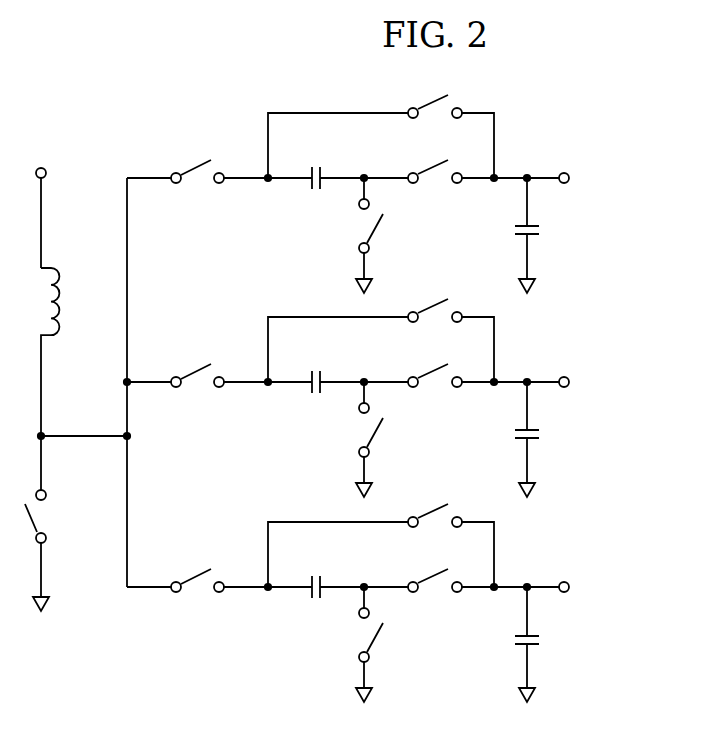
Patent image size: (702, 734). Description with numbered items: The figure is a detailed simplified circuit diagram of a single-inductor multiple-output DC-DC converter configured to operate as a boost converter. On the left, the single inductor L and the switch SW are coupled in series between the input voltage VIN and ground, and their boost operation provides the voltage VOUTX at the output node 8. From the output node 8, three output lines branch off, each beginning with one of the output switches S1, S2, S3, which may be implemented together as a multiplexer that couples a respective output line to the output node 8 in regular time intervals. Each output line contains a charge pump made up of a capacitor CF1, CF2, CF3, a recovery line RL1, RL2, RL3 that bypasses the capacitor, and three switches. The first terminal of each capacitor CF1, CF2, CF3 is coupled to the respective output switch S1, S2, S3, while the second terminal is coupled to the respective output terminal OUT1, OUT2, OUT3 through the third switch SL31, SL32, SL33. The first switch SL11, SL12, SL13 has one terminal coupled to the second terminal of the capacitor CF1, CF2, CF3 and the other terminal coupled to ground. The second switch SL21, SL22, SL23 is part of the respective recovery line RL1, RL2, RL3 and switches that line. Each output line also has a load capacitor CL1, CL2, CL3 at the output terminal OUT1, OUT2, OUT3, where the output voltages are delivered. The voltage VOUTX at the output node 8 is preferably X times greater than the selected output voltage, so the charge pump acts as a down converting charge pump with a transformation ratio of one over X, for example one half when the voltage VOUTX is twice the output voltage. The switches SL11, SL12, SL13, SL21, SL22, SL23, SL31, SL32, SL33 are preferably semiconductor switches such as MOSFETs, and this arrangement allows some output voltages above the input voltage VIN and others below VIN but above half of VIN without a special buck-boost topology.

The output node 8 is at (119, 440).
The input voltage VIN is at (42, 204).
The single inductor L is at (59, 352).
The switch SW is at (56, 523).
The voltage at output node VOUTX is at (127, 363).
The first output switch S1 is at (197, 162).
The second output switch S2 is at (197, 366).
The third output switch S3 is at (197, 571).
The first recovery line RL1 is at (379, 135).
The second recovery line RL2 is at (379, 339).
The third recovery line RL3 is at (379, 544).
The first charge pump capacitor CF1 is at (316, 162).
The second charge pump capacitor CF2 is at (316, 366).
The third charge pump capacitor CF3 is at (316, 571).
The first switch of first charge pump SL11 is at (391, 235).
The first switch of second charge pump SL12 is at (391, 439).
The first switch of third charge pump SL13 is at (391, 644).
The second switch of first charge pump SL21 is at (435, 94).
The second switch of second charge pump SL22 is at (435, 298).
The second switch of third charge pump SL23 is at (435, 503).
The third switch of first charge pump SL31 is at (460, 159).
The third switch of second charge pump SL32 is at (460, 363).
The third switch of third charge pump SL33 is at (460, 568).
The first load capacitor CL1 is at (548, 235).
The second load capacitor CL2 is at (548, 439).
The third load capacitor CL3 is at (548, 644).
The first output terminal OUT1 is at (567, 169).
The second output terminal OUT2 is at (567, 373).
The third output terminal OUT3 is at (567, 578).